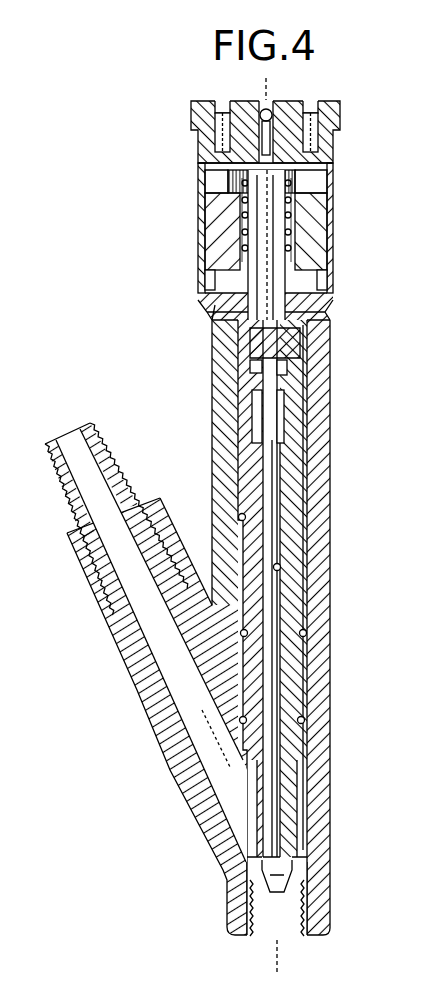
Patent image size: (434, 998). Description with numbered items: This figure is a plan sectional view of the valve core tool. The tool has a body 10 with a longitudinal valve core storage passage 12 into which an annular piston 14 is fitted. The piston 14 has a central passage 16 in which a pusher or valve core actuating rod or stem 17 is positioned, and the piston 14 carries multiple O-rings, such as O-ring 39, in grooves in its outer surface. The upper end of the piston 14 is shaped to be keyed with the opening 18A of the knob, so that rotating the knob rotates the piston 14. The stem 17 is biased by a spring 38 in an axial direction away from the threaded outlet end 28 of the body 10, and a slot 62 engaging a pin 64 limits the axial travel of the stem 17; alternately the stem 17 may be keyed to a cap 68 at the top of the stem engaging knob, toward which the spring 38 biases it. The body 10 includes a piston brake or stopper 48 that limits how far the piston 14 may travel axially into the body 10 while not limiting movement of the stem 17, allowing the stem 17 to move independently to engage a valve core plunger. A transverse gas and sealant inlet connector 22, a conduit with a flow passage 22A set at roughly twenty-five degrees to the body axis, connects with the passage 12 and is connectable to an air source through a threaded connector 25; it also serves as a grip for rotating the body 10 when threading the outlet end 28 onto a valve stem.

The body 10 is at (332, 406).
The longitudinal valve core storage passage 12 is at (300, 492).
The annular piston 14 is at (300, 378).
The central passage 16 is at (280, 567).
The valve core actuating rod or stem 17 is at (273, 422).
The opening of knob 18A is at (325, 258).
The gas and sealant inlet connector 22 is at (180, 772).
The flow passage 22A is at (148, 710).
The threaded connector 25 is at (123, 482).
The outlet end 28 is at (303, 937).
The spring 38 is at (300, 219).
The O-ring 39 is at (288, 343).
The piston brake or stopper 48 is at (315, 312).
The longitudinal slot 62 is at (272, 157).
The pin 64 is at (268, 128).
The cap 68 is at (300, 178).